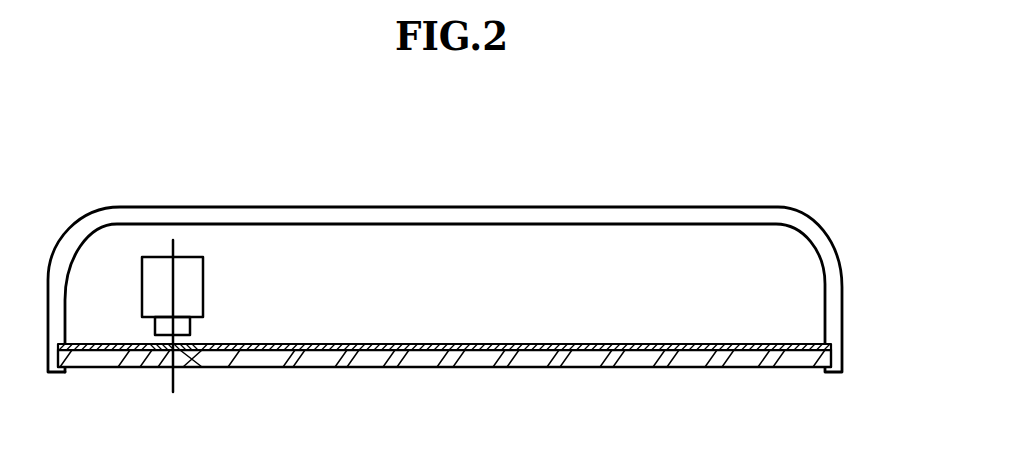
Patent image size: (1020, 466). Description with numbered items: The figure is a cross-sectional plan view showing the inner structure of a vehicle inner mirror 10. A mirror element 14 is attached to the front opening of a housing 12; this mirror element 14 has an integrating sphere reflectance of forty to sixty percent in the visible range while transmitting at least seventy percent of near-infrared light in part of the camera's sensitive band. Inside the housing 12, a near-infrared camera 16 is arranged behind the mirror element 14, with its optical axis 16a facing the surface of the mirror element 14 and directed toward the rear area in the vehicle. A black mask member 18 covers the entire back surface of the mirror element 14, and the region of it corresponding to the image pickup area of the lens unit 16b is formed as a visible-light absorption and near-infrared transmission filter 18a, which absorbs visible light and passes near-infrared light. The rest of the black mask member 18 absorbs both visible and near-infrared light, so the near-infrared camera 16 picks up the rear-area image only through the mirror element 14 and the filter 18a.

The inner mirror 10 is at (653, 170).
The housing 12 is at (452, 210).
The mirror element 14 is at (483, 360).
The near-infrared camera 16 is at (200, 257).
The optical axis 16a is at (169, 375).
The lens unit 16b is at (191, 328).
The black mask member 18 is at (372, 346).
The visible-light absorption and near-infrared transmission filter 18a is at (195, 352).